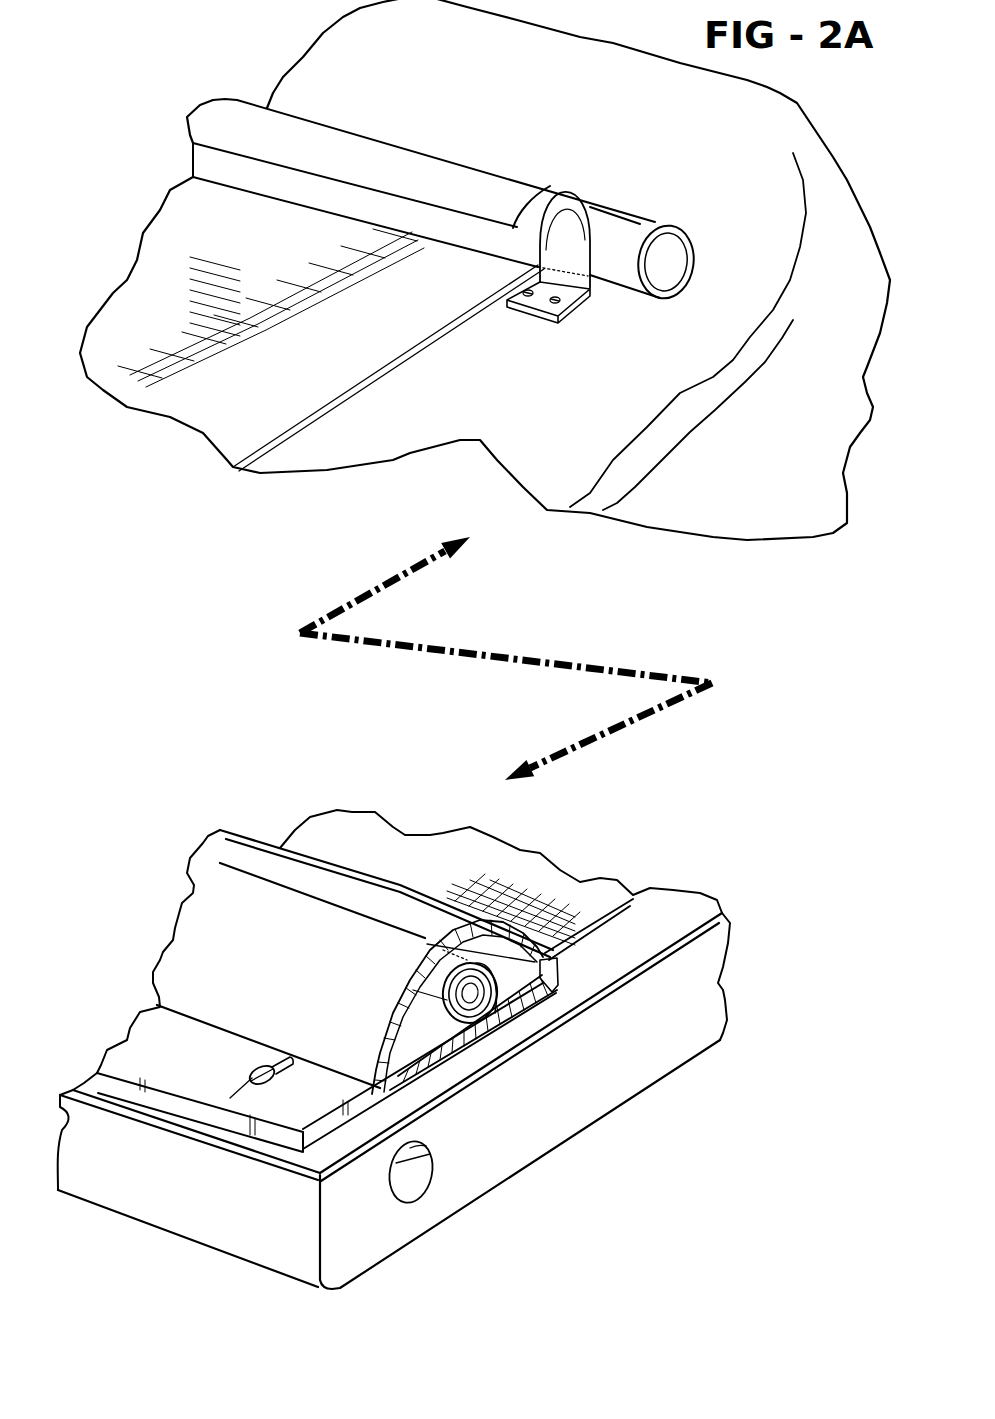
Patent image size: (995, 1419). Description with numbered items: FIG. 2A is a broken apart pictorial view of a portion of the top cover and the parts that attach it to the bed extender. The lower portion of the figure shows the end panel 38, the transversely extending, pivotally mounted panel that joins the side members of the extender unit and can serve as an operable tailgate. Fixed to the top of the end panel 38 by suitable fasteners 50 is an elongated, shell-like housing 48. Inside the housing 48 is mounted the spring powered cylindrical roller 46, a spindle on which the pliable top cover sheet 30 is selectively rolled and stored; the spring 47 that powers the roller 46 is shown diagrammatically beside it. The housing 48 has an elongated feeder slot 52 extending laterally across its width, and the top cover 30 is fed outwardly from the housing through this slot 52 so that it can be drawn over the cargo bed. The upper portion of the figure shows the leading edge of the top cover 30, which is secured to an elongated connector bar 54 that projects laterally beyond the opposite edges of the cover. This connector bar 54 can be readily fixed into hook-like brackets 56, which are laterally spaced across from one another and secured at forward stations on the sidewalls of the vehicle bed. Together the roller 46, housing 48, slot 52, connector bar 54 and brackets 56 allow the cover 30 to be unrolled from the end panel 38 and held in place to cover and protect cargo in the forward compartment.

The top cover sheet 30 is at (190, 230).
The connector bar 54 is at (652, 222).
The hook-like bracket 56 is at (580, 213).
The end panel 38 is at (487, 1145).
The roller 46 is at (506, 985).
The spring 47 is at (530, 1010).
The housing 48 is at (270, 917).
The fastener 50 is at (250, 1067).
The feeder slot 52 is at (550, 960).